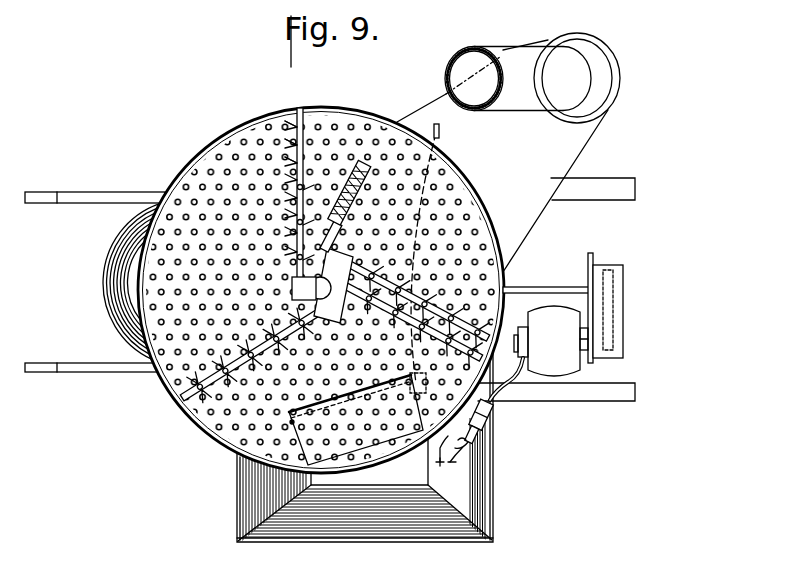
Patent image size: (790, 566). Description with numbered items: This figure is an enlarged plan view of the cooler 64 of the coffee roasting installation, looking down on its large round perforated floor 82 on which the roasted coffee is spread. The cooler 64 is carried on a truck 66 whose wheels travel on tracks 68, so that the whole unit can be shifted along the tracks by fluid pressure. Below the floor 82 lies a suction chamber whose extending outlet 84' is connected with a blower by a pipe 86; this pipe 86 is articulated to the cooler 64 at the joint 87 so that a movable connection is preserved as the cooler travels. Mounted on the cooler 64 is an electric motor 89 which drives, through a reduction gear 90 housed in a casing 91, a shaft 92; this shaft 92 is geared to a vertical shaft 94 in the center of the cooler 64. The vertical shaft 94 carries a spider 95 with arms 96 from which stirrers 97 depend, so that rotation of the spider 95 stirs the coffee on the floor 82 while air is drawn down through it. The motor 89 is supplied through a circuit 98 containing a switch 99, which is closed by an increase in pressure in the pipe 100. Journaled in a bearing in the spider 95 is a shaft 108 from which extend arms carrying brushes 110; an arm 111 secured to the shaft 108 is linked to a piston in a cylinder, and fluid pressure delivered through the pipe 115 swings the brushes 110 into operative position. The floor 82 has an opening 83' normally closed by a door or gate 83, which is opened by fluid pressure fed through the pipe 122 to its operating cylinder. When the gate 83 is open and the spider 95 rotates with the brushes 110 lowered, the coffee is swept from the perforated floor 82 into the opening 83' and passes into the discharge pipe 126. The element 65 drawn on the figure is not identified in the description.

The cooler 64 is at (488, 206).
The coil spring 65 is at (102, 272).
The truck 66 is at (604, 186).
The tracks 68 is at (78, 195).
The perforated floor 82 is at (226, 446).
The door or gate 83 is at (356, 427).
The opening 83' is at (350, 440).
The extending outlet 84' is at (513, 156).
The pipe 86 is at (518, 79).
The articulated connection 87 is at (600, 90).
The electric motor 89 is at (551, 341).
The reduction gear 90 is at (623, 306).
The casing 91 is at (617, 265).
The shaft 92 is at (560, 287).
The vertical shaft 94 is at (322, 300).
The spider 95 is at (292, 287).
The arms 96 is at (298, 110).
The stirrers 97 is at (303, 128).
The circuit 98 is at (494, 408).
The switch 99 is at (486, 420).
The pipe 100 is at (472, 446).
The shaft 108 is at (484, 322).
The brushes 110 is at (440, 290).
The arm 111 is at (338, 240).
The pipe 115 is at (345, 210).
The pipe 122 is at (441, 130).
The discharge pipe 126 is at (496, 500).